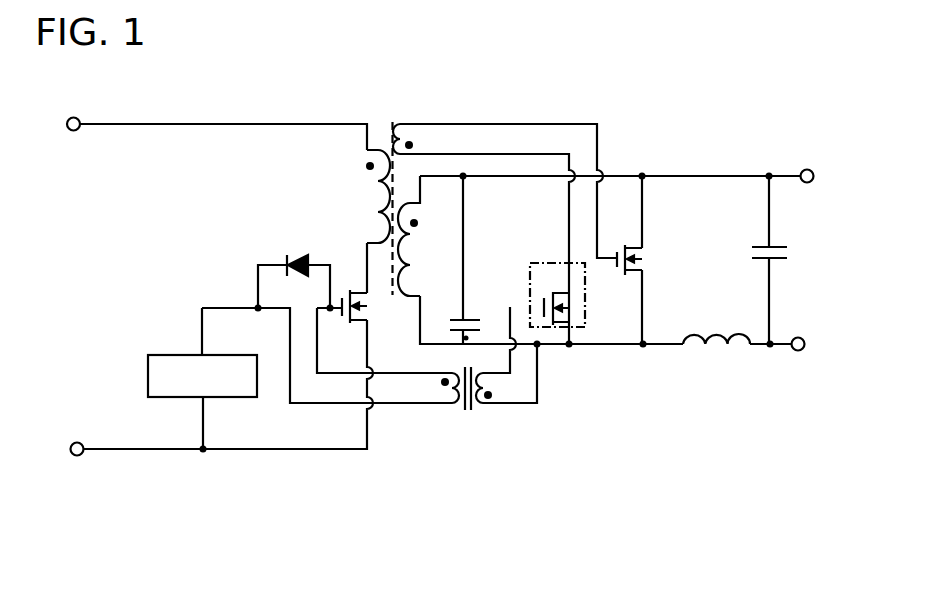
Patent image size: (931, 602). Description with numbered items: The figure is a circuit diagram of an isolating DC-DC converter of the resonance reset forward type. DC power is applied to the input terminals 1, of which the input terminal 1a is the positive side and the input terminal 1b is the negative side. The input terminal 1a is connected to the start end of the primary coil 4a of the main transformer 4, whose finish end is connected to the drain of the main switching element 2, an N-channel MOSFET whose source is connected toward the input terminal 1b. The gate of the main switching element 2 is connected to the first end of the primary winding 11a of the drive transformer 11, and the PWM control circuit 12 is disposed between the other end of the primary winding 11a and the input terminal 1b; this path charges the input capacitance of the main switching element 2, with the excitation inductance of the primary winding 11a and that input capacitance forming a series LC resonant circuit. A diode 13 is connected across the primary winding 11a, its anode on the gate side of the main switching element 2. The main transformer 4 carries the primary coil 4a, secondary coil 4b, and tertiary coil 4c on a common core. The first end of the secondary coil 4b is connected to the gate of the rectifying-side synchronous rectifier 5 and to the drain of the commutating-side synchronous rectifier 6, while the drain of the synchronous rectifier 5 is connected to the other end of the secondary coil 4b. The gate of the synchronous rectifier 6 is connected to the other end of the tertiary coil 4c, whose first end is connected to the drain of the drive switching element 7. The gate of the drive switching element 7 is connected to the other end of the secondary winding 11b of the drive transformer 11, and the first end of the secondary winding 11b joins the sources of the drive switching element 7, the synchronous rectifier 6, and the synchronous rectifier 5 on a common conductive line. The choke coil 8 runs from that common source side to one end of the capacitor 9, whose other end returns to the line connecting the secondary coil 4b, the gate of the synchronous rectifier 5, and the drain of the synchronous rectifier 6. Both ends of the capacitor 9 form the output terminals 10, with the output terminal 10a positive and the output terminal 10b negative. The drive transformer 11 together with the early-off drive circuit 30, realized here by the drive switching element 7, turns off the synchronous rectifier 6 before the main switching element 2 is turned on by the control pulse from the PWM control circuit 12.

The input terminals 1 is at (71, 287).
The input terminal on the (+) side 1a is at (70, 140).
The input terminal on the (−) side 1b is at (72, 434).
The main switching element 2 is at (363, 306).
The main transformer 4 is at (396, 193).
The primary coil 4a is at (368, 196).
The secondary coil 4b is at (417, 236).
The tertiary coil 4c is at (419, 139).
The rectifying-side synchronous rectifier 5 is at (467, 260).
The commutating-side synchronous rectifier 6 is at (638, 260).
The drive switching element 7 is at (557, 297).
The choke coil 8 is at (716, 326).
The capacitor 9 is at (767, 260).
The output terminals 10 is at (813, 260).
The (+) side output terminal 10a is at (812, 162).
The (−) side output terminal 10b is at (814, 359).
The drive transformer 11 is at (464, 401).
The primary winding of the drive transformer 11a is at (428, 388).
The secondary winding of the drive transformer 11b is at (503, 388).
The PWM control circuit 12 is at (174, 356).
The diode 13 is at (295, 254).
The early-off drive circuit 30 is at (586, 306).